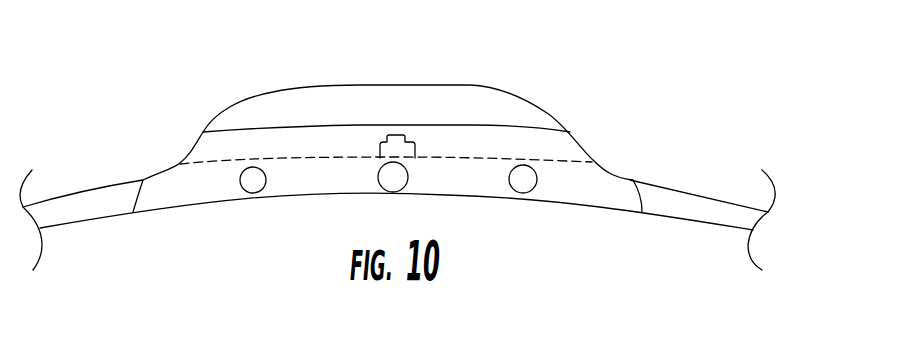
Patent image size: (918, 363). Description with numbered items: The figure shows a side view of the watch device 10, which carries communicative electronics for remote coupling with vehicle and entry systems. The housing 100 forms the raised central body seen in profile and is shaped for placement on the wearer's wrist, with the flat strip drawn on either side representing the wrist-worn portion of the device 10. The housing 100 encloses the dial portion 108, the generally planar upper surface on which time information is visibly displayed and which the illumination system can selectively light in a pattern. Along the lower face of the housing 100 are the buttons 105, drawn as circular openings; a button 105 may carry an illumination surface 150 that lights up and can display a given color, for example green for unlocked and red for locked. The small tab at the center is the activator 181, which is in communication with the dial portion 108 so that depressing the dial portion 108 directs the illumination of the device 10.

The device 10 is at (115, 168).
The housing 100 is at (203, 132).
The button 105 is at (244, 190).
The dial portion 108 is at (387, 85).
The illumination surface 150 is at (264, 186).
The activator 181 is at (403, 148).